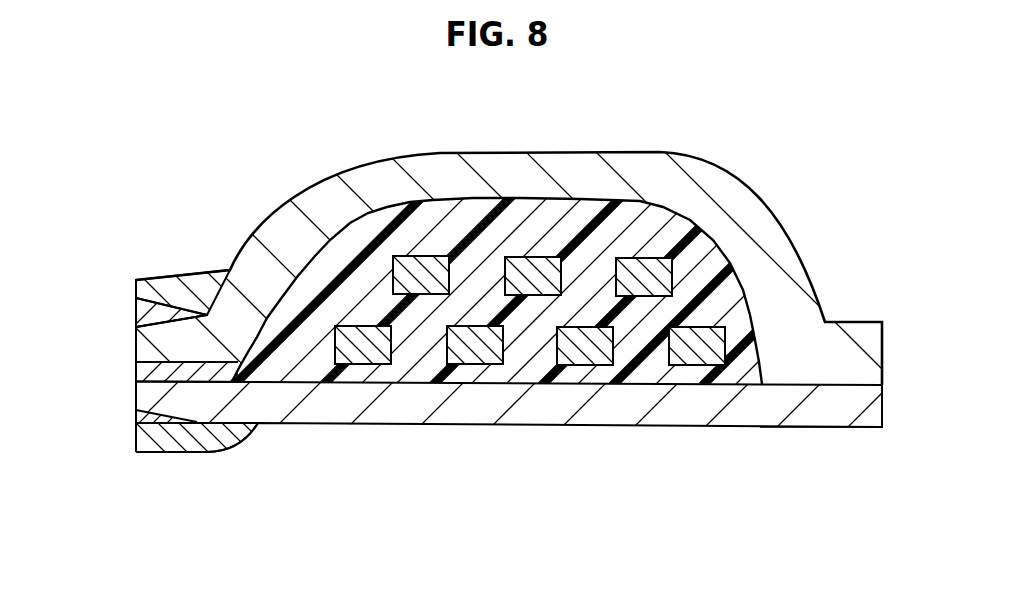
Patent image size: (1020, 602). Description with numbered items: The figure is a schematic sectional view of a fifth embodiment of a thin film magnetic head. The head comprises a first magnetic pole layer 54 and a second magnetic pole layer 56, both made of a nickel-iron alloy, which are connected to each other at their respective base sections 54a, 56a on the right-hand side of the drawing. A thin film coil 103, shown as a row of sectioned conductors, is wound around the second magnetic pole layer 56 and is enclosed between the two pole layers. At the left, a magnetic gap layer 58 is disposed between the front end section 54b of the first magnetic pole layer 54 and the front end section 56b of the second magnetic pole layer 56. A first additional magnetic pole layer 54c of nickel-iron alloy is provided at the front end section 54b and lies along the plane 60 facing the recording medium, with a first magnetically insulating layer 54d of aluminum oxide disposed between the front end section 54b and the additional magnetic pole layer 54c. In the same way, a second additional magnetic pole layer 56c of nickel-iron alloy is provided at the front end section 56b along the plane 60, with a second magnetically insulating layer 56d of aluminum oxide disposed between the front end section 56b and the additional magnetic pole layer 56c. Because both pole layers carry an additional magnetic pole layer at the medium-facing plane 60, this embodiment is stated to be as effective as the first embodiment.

The first magnetic pole layer 54 is at (530, 414).
The base section of the first magnetic pole layer 54a is at (837, 422).
The front end section of the first magnetic pole layer 54b is at (138, 399).
The first additional magnetic pole layer 54c is at (177, 453).
The first magnetically insulating layer 54d is at (138, 425).
The second magnetic pole layer 56 is at (505, 162).
The base section of the second magnetic pole layer 56a is at (866, 334).
The front end section of the second magnetic pole layer 56b is at (138, 346).
The second additional magnetic pole layer 56c is at (138, 285).
The second magnetically insulating layer 56d is at (138, 313).
The magnetic gap layer 58 is at (138, 373).
The plane facing the recording medium 60 is at (135, 278).
The thin film coil 103 is at (665, 273).